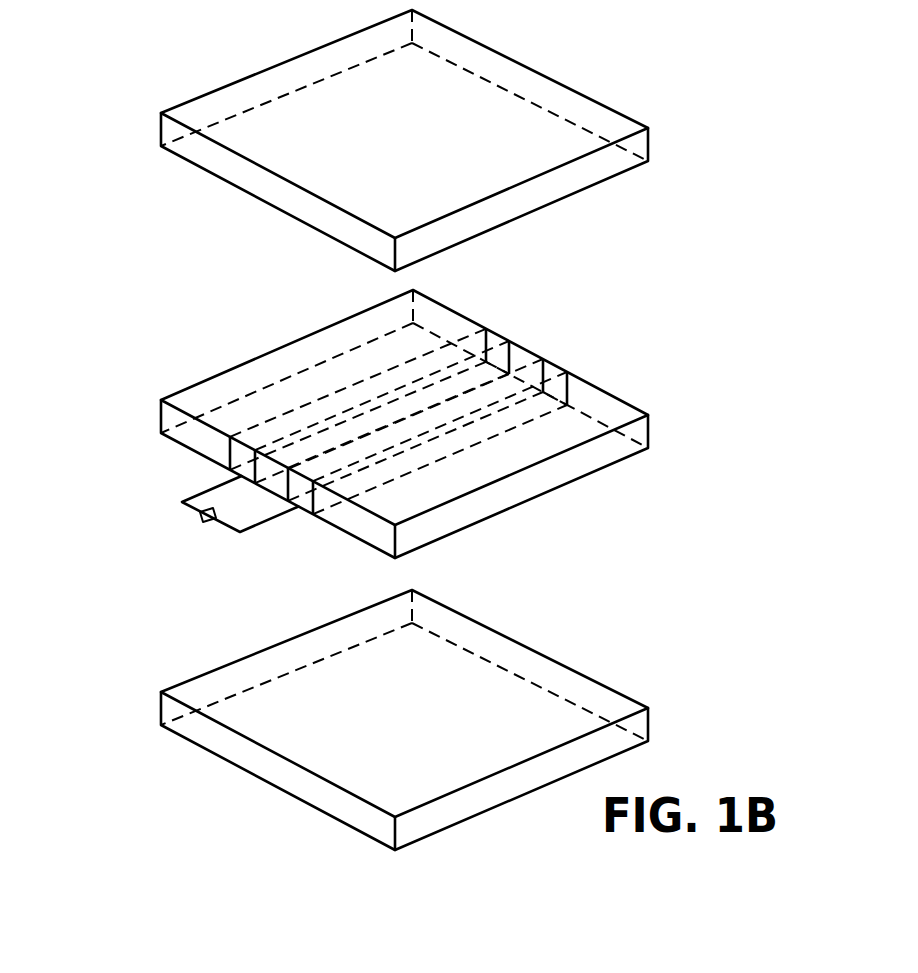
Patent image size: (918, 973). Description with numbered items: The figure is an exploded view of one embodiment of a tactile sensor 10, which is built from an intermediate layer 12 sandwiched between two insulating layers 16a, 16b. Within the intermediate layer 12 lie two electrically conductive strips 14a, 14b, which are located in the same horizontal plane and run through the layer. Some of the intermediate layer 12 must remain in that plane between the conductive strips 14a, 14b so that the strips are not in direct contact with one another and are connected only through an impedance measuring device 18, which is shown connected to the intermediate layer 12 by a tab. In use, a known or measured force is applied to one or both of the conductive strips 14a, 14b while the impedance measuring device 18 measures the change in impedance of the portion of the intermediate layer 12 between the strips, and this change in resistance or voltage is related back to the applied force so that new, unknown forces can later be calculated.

The tactile sensor 10 is at (150, 288).
The intermediate layer 12 is at (640, 432).
The electrically conductive strip 14a is at (492, 342).
The electrically conductive strip 14b is at (550, 370).
The insulating layer 16a is at (642, 143).
The insulating layer 16b is at (640, 727).
The impedance measuring device 18 is at (199, 516).